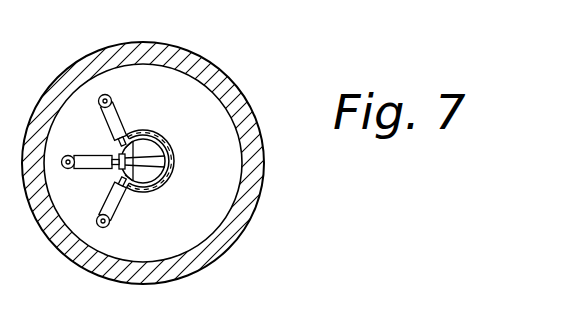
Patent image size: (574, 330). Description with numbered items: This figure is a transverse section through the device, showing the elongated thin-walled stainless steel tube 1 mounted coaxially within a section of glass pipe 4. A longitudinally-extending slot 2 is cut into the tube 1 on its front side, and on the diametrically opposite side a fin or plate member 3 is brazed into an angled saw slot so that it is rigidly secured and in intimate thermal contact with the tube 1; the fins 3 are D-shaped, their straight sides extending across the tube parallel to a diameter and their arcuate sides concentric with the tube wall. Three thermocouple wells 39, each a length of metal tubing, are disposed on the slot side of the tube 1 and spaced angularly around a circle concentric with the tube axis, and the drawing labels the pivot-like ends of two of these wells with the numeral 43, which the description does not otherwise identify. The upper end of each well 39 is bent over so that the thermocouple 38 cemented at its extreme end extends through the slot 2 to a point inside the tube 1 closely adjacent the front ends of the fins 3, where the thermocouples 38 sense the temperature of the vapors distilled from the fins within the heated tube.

The stainless steel tube 1 is at (158, 148).
The longitudinally-extending slot 2 is at (124, 143).
The fin or plate member 3 is at (157, 138).
The section of glass pipe 4 is at (257, 178).
The thermocouple 38 is at (122, 157).
The thermocouple well 39 is at (110, 119).
The pivot pins 43 is at (109, 97).